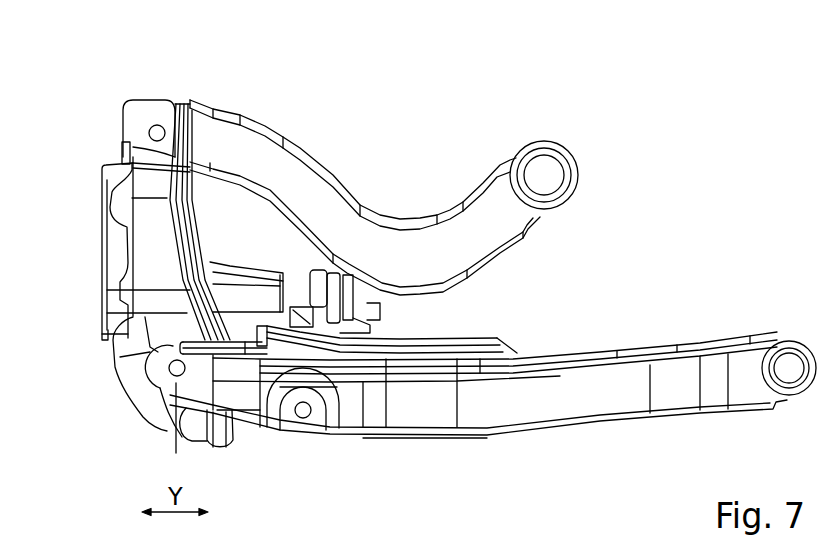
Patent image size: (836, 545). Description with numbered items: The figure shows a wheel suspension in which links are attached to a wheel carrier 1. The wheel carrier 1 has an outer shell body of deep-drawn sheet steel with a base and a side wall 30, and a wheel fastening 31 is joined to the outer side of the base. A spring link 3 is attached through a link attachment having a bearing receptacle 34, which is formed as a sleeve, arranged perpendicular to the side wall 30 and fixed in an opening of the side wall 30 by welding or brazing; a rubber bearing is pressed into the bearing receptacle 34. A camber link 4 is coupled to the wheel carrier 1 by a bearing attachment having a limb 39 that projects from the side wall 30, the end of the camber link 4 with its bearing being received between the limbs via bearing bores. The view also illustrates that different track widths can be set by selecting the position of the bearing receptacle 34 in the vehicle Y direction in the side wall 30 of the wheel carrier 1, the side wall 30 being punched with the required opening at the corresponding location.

The wheel carrier 1 is at (77, 92).
The spring link 3 is at (524, 440).
The camber link 4 is at (334, 168).
The side wall 30 is at (140, 337).
The wheel fastening 31 is at (102, 177).
The bearing receptacle 34 is at (144, 379).
The limb 39 is at (135, 120).